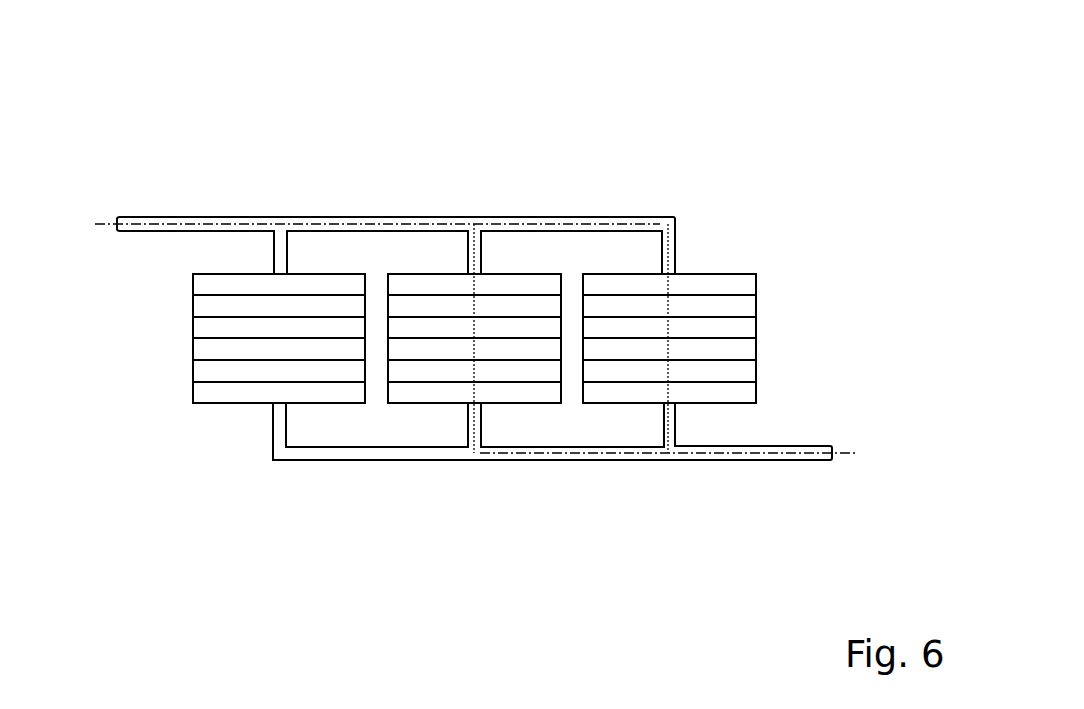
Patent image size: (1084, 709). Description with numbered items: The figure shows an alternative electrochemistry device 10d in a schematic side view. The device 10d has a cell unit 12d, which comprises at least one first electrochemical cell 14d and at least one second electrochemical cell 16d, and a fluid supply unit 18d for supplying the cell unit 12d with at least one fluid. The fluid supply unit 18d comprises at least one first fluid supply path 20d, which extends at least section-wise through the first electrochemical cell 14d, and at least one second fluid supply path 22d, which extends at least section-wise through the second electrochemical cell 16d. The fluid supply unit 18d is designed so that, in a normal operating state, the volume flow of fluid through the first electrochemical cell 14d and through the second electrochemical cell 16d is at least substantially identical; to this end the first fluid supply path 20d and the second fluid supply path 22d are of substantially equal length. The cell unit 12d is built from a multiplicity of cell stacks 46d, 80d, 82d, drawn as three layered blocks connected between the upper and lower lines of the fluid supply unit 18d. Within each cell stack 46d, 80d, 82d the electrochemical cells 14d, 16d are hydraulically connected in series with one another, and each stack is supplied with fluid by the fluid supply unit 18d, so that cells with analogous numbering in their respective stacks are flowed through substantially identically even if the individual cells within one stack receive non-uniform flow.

The alternative electrochemistry device 10d is at (495, 283).
The cell unit 12d is at (739, 323).
The first electrochemical cell 14d is at (735, 327).
The second electrochemical cell 16d is at (418, 330).
The fluid supply unit 18d is at (426, 187).
The first fluid supply path 20d is at (565, 465).
The second fluid supply path 22d is at (480, 430).
The cell stack 46d is at (716, 260).
The cell stack 80d is at (518, 260).
The cell stack 82d is at (324, 260).